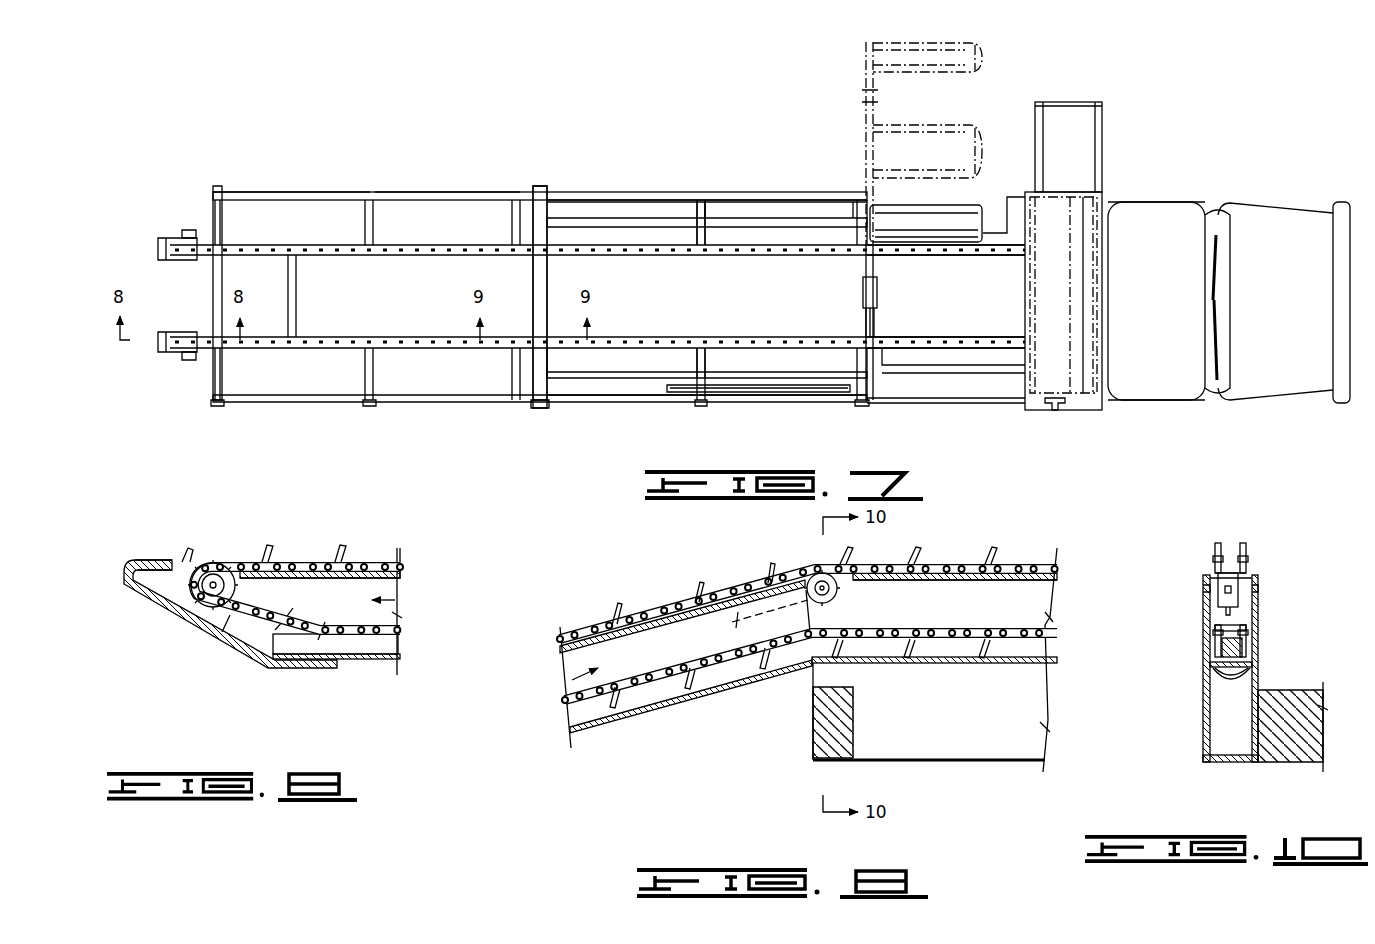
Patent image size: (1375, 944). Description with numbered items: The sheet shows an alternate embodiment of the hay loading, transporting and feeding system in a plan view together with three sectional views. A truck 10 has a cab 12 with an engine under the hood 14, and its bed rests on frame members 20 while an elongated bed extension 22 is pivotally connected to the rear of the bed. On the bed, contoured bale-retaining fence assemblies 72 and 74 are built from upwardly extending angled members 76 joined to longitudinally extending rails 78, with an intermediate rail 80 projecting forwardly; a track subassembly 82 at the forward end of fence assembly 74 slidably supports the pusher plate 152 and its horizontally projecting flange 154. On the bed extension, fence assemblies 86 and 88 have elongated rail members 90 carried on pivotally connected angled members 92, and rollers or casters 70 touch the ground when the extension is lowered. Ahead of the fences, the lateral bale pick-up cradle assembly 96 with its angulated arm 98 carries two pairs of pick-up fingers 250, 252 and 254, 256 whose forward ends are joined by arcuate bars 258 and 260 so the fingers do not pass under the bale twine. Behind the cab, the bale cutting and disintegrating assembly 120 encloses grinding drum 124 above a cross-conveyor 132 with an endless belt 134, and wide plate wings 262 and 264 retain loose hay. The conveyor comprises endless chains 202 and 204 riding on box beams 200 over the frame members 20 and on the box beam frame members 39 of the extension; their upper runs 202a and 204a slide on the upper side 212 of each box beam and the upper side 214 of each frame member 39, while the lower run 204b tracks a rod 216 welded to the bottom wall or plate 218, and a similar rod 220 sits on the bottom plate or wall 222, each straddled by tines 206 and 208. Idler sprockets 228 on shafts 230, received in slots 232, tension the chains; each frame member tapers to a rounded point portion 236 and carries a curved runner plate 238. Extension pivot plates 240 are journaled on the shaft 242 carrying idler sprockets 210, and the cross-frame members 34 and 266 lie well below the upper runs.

In FIG. 7, the truck 10 is at (1245, 198).
In FIG. 7, the cab 12 is at (1169, 301).
In FIG. 7, the hood 14 is at (1284, 302).
In FIG. 9, the frame members 20 is at (935, 660).
In FIG. 10, the frame members 20 is at (1203, 710).
In FIG. 9, the bed extension 22 is at (700, 700).
In FIG. 9, the cross-frame member 34 is at (840, 722).
In FIG. 8, the frame members 39 is at (398, 600).
In FIG. 9, the frame members 39 is at (570, 680).
In FIG. 7, the rollers or casters 70 is at (186, 230).
In FIG. 7, the contoured bale-retaining fence assembly 72 is at (558, 190).
In FIG. 7, the contoured bale-retaining fence assembly 74 is at (622, 405).
In FIG. 7, the angled members 76 is at (705, 215).
In FIG. 7, the rails 78 is at (808, 194).
In FIG. 7, the intermediate rail 80 is at (595, 218).
In FIG. 7, the track subassembly 82 is at (768, 403).
In FIG. 7, the fence assembly 86 is at (262, 190).
In FIG. 7, the fence assembly 88 is at (302, 403).
In FIG. 7, the elongated rail members 90 is at (430, 192).
In FIG. 7, the angled members 92 is at (223, 235).
In FIG. 7, the lateral bale pick-up cradle assembly 96 is at (862, 140).
In FIG. 7, the angulated arm 98 is at (860, 152).
In FIG. 7, the bale cutting and disintegrating assembly 120 is at (1095, 200).
In FIG. 7, the grinding drum 124 is at (1057, 395).
In FIG. 7, the cross-conveyor 132 is at (1108, 118).
In FIG. 7, the endless belt 134 is at (1075, 108).
In FIG. 7, the pusher plate 152 is at (735, 392).
In FIG. 7, the flange 154 is at (838, 392).
In FIG. 9, the box beam 200 is at (1088, 605).
In FIG. 10, the box beam 200 is at (1200, 625).
In FIG. 7, the endless chain 202 is at (662, 258).
In FIG. 7, the upper run 202a is at (752, 258).
In FIG. 7, the endless chain 204 is at (670, 335).
In FIG. 10, the endless chain 204 is at (1200, 560).
In FIG. 7, the upper run 204a is at (778, 345).
In FIG. 10, the lower run 204b is at (1243, 625).
In FIG. 8, the tines 206 is at (338, 545).
In FIG. 9, the tines 206 is at (768, 577).
In FIG. 10, the tines 206 is at (1215, 543).
In FIG. 8, the tines 208 is at (267, 545).
In FIG. 9, the tines 208 is at (850, 560).
In FIG. 10, the tines 208 is at (1245, 543).
In FIG. 9, the sprocket 210 is at (835, 596).
In FIG. 10, the sprocket 210 is at (1235, 580).
In FIG. 9, the upper side 212 is at (958, 580).
In FIG. 10, the upper side 212 is at (1245, 572).
In FIG. 8, the upper side 214 is at (396, 586).
In FIG. 9, the upper side 214 is at (560, 660).
In FIG. 10, the rod 216 is at (1255, 664).
In FIG. 10, the bottom wall or plate 218 is at (1212, 678).
In FIG. 8, the rod 220 is at (375, 658).
In FIG. 8, the bottom plate or wall 222 is at (400, 657).
In FIG. 8, the idler sprockets 228 is at (225, 590).
In FIG. 8, the shafts 230 is at (213, 578).
In FIG. 8, the slots 232 is at (190, 565).
In FIG. 8, the rounded point portion 236 is at (150, 600).
In FIG. 7, the curved runner plate 238 is at (165, 245).
In FIG. 8, the curved runner plate 238 is at (208, 638).
In FIG. 7, the extension pivot plate 240 is at (540, 188).
In FIG. 9, the extension pivot plate 240 is at (730, 623).
In FIG. 9, the shaft 242 is at (822, 578).
In FIG. 7, the pick-up finger 250 is at (925, 42).
In FIG. 7, the pick-up finger 252 is at (912, 72).
In FIG. 7, the pick-up finger 254 is at (905, 135).
In FIG. 7, the pick-up finger 256 is at (900, 178).
In FIG. 7, the arcuate bar 258 is at (985, 55).
In FIG. 7, the arcuate bar 260 is at (985, 145).
In FIG. 7, the wide plate wing 262 is at (992, 233).
In FIG. 7, the wide plate wing 264 is at (950, 365).
In FIG. 7, the cross-frame member 266 is at (296, 300).